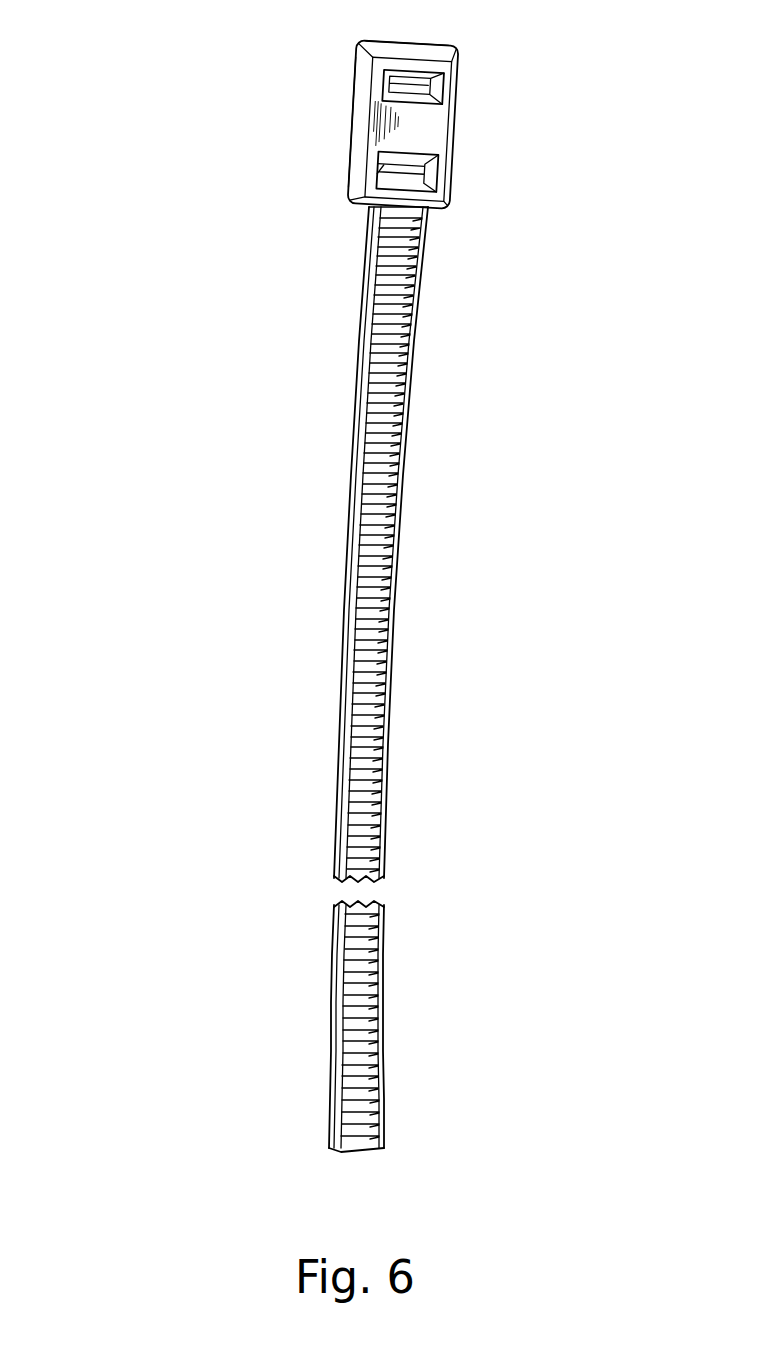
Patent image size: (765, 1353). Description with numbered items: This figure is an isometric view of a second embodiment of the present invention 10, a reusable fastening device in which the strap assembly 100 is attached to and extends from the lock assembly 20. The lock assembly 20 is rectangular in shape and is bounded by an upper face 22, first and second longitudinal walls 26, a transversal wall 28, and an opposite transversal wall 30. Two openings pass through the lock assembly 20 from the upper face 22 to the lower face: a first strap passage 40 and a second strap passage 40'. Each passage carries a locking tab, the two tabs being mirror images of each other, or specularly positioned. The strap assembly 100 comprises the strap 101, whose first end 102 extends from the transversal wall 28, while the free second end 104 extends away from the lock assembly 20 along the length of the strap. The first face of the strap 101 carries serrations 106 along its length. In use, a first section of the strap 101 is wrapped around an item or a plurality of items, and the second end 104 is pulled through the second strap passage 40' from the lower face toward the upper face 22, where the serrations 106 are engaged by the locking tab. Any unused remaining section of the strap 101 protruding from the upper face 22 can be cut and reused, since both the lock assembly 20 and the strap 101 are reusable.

The present invention 10 is at (107, 90).
The lock assembly 20 is at (346, 125).
The upper face 22 is at (430, 128).
The longitudinal walls 26 is at (358, 150).
The transversal wall 28 is at (370, 207).
The transversal wall 30 is at (425, 47).
The first strap passage 40 is at (480, 181).
The second strap passage 40' is at (364, 59).
The strap assembly 100 is at (345, 516).
The strap 101 is at (407, 385).
The first end 102 is at (442, 203).
The second end 104 is at (353, 1150).
The serrations 106 is at (397, 558).